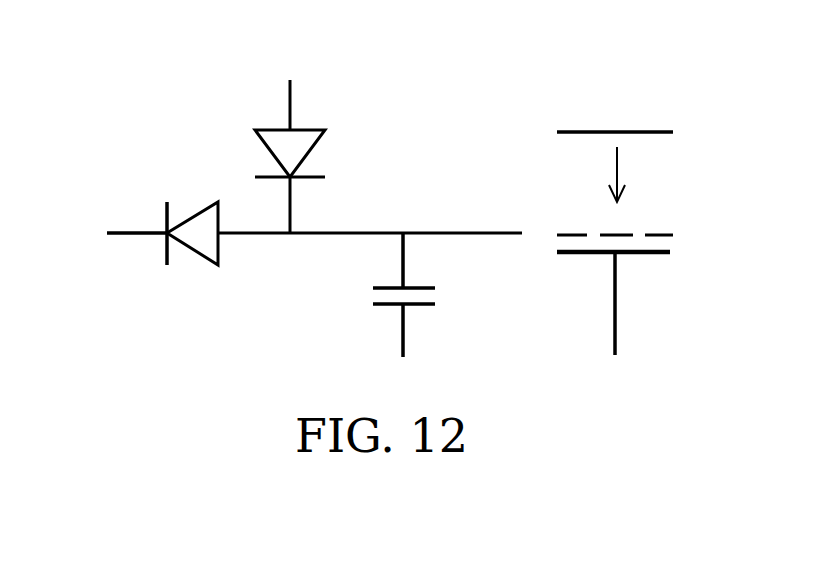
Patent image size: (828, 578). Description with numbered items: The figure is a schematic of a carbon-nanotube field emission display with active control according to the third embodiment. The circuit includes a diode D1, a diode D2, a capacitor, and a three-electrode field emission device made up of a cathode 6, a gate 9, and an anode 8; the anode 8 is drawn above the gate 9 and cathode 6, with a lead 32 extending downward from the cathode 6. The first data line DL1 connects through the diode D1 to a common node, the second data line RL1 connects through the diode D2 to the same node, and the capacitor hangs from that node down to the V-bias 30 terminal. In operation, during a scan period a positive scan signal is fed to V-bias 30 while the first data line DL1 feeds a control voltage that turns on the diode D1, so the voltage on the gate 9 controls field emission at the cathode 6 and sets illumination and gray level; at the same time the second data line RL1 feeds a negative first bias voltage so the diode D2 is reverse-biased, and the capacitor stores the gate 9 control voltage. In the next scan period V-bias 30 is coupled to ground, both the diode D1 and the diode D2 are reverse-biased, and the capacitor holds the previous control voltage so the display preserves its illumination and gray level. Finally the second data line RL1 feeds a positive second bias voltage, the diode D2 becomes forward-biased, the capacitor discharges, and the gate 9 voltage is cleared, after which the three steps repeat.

The second data line RL1 is at (288, 86).
The first data line DL1 is at (104, 232).
The diode D1 is at (195, 252).
The diode D2 is at (315, 155).
The V-bias 30 is at (400, 333).
The anode 8 is at (673, 132).
The gate 9 is at (673, 235).
The cathode 6 is at (670, 252).
The electrode lead 32 is at (615, 305).